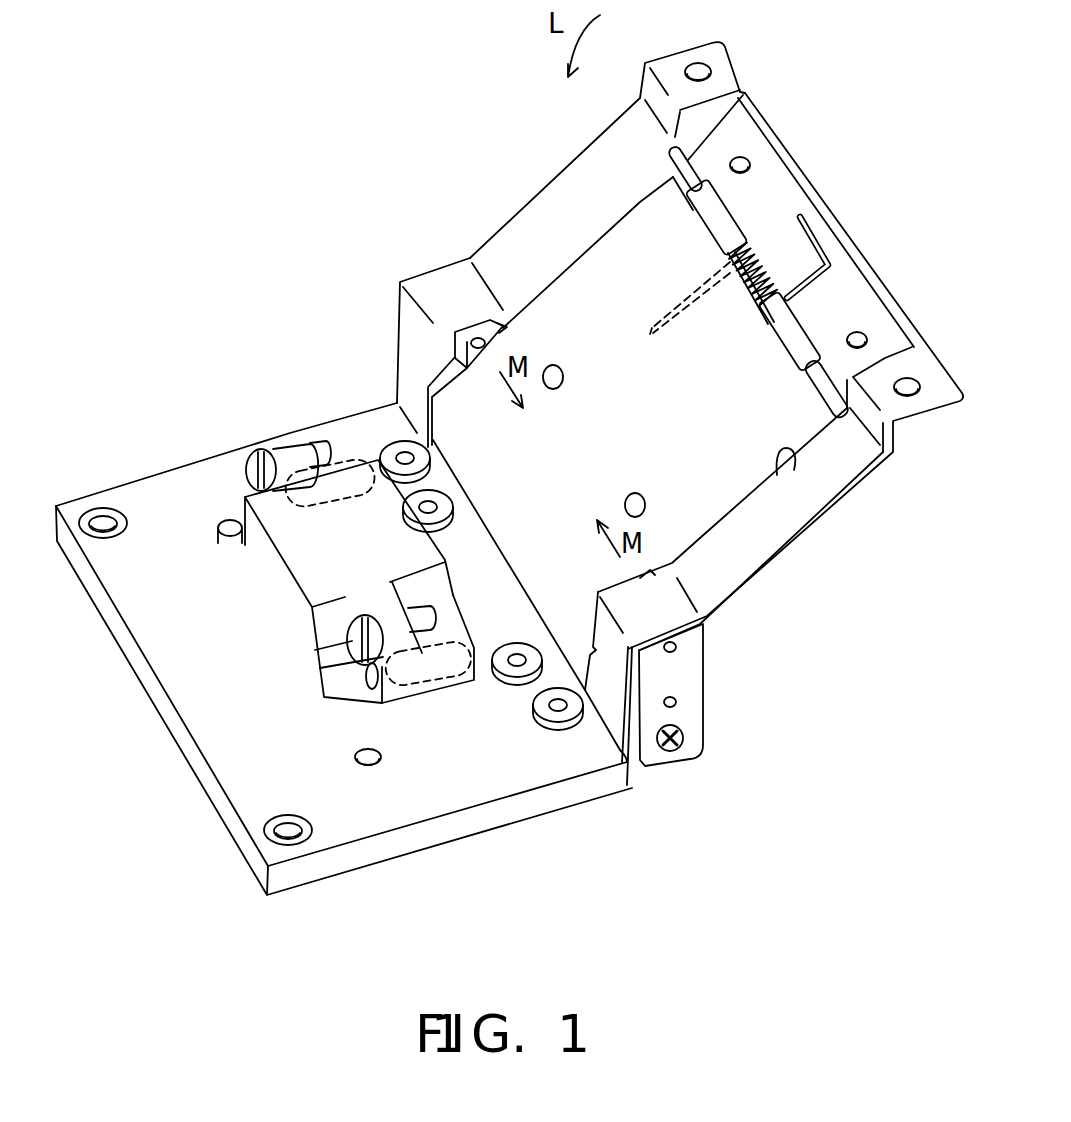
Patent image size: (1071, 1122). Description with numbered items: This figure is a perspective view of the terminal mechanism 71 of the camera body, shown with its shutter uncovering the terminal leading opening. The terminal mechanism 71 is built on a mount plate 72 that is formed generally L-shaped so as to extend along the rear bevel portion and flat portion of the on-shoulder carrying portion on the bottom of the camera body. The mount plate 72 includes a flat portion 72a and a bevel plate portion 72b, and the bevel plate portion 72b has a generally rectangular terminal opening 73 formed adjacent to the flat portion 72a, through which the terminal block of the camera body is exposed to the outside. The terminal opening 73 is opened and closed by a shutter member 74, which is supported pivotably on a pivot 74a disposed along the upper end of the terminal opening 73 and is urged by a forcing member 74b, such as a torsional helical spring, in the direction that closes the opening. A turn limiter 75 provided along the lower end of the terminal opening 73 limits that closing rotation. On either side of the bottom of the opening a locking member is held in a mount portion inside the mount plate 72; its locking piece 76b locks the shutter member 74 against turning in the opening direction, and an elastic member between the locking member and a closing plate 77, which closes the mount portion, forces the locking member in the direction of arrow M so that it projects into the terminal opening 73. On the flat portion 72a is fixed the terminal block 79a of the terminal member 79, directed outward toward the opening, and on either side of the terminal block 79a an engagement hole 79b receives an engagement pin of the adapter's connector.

The terminal mechanism 71 is at (417, 133).
The mount plate 72 is at (412, 313).
The flat portion 72a is at (540, 213).
The bevel plate portion 72b is at (155, 500).
The terminal opening 73 is at (776, 470).
The shutter member 74 is at (697, 480).
The pivot 74a is at (685, 160).
The forcing member 74b is at (807, 280).
The turn limiter 75 is at (442, 445).
The locking piece 76b is at (478, 338).
The closing plate 77 is at (693, 707).
The terminal member 79 is at (275, 606).
The terminal block 79a is at (462, 553).
The engagement hole 79b is at (285, 440).